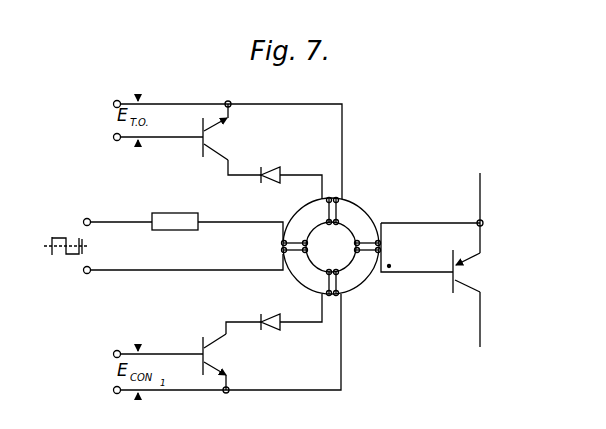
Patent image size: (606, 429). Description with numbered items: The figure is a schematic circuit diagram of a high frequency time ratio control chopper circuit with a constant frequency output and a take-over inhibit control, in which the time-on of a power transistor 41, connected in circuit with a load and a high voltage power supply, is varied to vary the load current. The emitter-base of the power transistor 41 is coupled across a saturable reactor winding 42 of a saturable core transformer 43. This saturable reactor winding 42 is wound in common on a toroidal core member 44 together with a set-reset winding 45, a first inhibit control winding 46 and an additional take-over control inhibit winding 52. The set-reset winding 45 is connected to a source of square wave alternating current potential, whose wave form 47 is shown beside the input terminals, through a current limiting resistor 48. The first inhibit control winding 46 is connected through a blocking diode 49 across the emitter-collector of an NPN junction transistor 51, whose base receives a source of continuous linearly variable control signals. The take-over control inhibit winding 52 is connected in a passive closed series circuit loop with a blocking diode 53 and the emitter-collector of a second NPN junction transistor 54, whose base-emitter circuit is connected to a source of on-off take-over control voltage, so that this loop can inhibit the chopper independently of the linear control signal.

The power transistor 41 is at (452, 291).
The saturable reactor winding 42 is at (380, 247).
The saturable core transformer 43 is at (340, 257).
The toroidal core member 44 is at (356, 279).
The set-reset winding 45 is at (283, 248).
The first inhibit control winding 46 is at (321, 288).
The square wave alternating current potential wave form 47 is at (65, 238).
The current limiting resistor 48 is at (186, 206).
The blocking diode 49 is at (277, 329).
The NPN junction transistor 51 is at (201, 340).
The take-over control inhibit winding 52 is at (341, 211).
The blocking diode 53 is at (274, 168).
The NPN junction transistor 54 is at (201, 156).